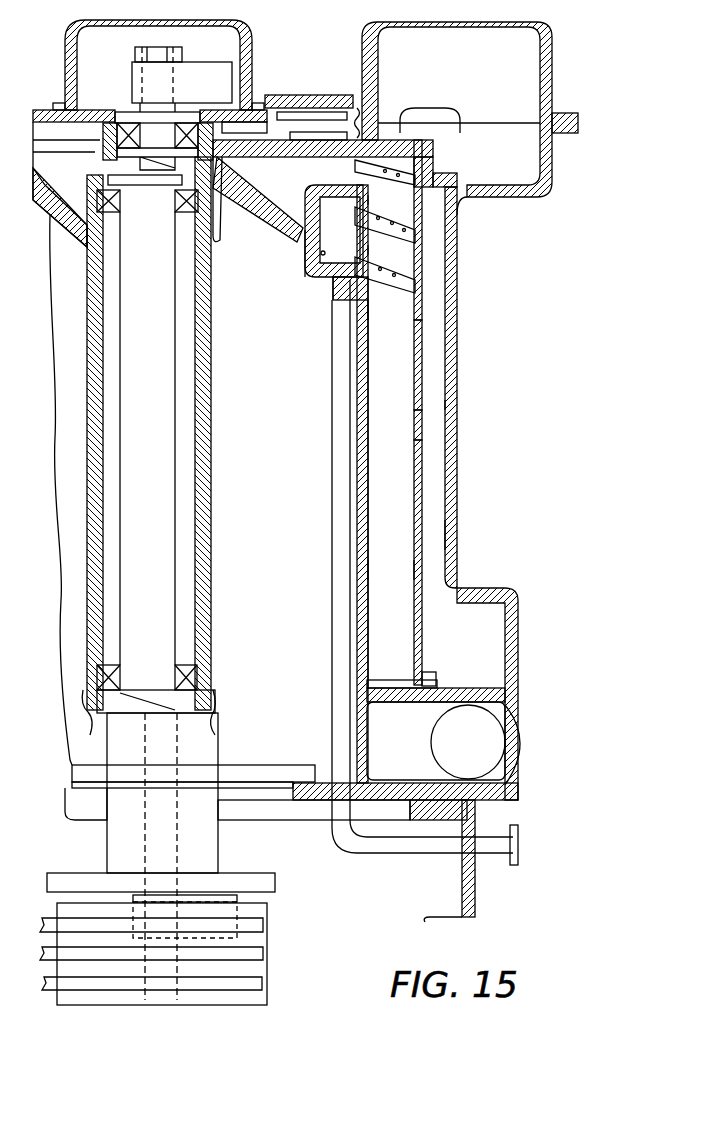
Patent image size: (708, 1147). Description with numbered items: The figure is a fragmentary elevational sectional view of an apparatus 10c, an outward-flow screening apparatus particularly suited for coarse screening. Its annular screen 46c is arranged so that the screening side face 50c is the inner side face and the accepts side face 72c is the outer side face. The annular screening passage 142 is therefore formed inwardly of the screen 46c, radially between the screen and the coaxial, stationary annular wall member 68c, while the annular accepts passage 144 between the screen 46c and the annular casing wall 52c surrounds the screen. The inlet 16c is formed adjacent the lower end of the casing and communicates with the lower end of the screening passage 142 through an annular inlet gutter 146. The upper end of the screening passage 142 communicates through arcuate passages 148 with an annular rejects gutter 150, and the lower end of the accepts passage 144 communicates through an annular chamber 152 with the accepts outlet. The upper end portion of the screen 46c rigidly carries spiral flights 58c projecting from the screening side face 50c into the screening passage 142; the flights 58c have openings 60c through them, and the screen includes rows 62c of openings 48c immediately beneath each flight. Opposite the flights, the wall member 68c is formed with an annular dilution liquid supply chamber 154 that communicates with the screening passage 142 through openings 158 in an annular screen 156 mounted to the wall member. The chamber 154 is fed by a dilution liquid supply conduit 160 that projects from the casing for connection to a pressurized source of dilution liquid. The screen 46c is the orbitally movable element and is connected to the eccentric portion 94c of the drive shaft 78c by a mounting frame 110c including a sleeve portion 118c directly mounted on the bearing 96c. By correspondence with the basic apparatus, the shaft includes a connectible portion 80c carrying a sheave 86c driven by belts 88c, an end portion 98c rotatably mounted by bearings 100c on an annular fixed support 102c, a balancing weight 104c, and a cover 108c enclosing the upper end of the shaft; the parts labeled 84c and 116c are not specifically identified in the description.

The apparatus 10c is at (458, 405).
The inlet 16c is at (527, 728).
The annular screen 46c is at (413, 513).
The openings 48c is at (420, 463).
The screening side face 50c is at (425, 418).
The annular casing wall 52c is at (452, 494).
The spiral flights 58c is at (405, 296).
The openings 60c is at (393, 283).
The rows of openings 62c is at (418, 198).
The annular wall member 68c is at (362, 610).
The accepts side face 72c is at (422, 371).
The drive shaft 78c is at (176, 480).
The connectible portion 80c is at (173, 857).
The lower shaft 84c is at (118, 852).
The sheave 86c is at (128, 997).
The driving belts 88c is at (262, 983).
The eccentric portion 94c is at (160, 378).
The bearing 96c is at (178, 204).
The end portion 98c is at (150, 135).
The bearings 100c is at (108, 178).
The annular fixed support 102c is at (220, 132).
The balancing weight 104c is at (220, 76).
The cover 108c is at (243, 30).
The mounting frame 110c is at (369, 137).
The plate 116c is at (428, 684).
The sleeve portion 118c is at (222, 228).
The annular screening passage 142 is at (400, 570).
The annular accepts passage 144 is at (433, 537).
The annular inlet gutter 146 is at (462, 788).
The arcuate passages 148 is at (445, 118).
The annular rejects gutter 150 is at (527, 83).
The annular chamber 152 is at (485, 636).
The dilution liquid supply chamber 154 is at (356, 213).
The annular screen 156 is at (352, 287).
The openings 158 is at (320, 255).
The dilution liquid supply conduit 160 is at (393, 847).